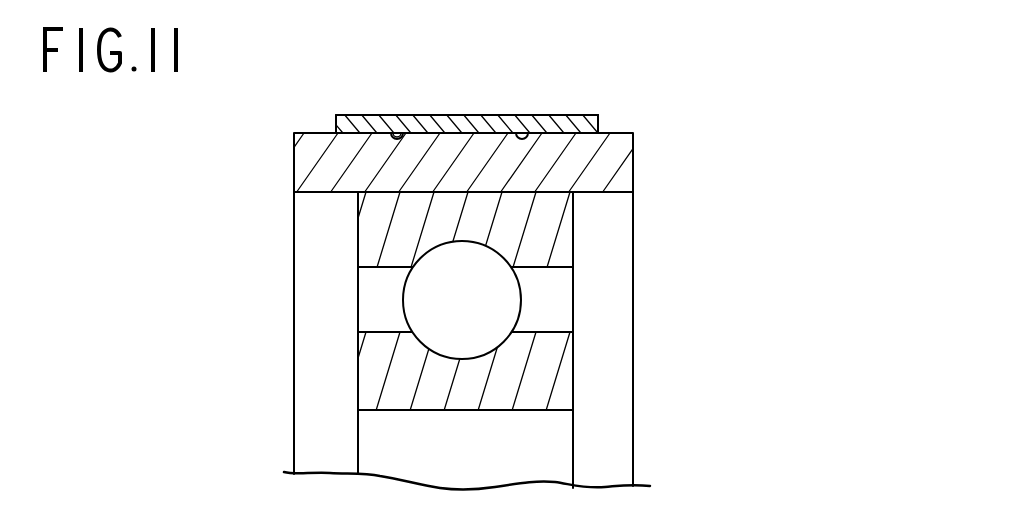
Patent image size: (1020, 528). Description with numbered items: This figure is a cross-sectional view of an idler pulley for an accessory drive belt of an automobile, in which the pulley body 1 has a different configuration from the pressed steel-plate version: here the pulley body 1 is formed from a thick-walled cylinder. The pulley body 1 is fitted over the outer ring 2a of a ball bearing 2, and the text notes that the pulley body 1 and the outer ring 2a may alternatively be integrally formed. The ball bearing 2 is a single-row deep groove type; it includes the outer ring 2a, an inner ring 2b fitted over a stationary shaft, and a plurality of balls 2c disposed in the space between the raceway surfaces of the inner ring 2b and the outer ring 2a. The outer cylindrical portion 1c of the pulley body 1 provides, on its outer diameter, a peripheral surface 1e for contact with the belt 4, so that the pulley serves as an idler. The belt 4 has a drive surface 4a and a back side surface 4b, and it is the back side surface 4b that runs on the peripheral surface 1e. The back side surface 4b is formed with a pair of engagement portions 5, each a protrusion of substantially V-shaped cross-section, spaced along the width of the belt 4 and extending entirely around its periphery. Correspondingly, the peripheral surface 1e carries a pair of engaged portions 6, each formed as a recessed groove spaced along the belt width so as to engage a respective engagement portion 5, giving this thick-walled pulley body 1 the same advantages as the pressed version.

The pulley body 1 is at (520, 152).
The outer cylindrical portion 1c is at (606, 172).
The peripheral surface 1e is at (603, 133).
The ball bearing 2 is at (468, 340).
The outer ring 2a is at (368, 239).
The inner ring 2b is at (365, 371).
The balls 2c is at (492, 340).
The belt 4 is at (449, 137).
The drive surface 4a is at (352, 115).
The back side surface 4b is at (345, 134).
The engagement portion 5 is at (393, 135).
The engaged portion 6 is at (395, 140).